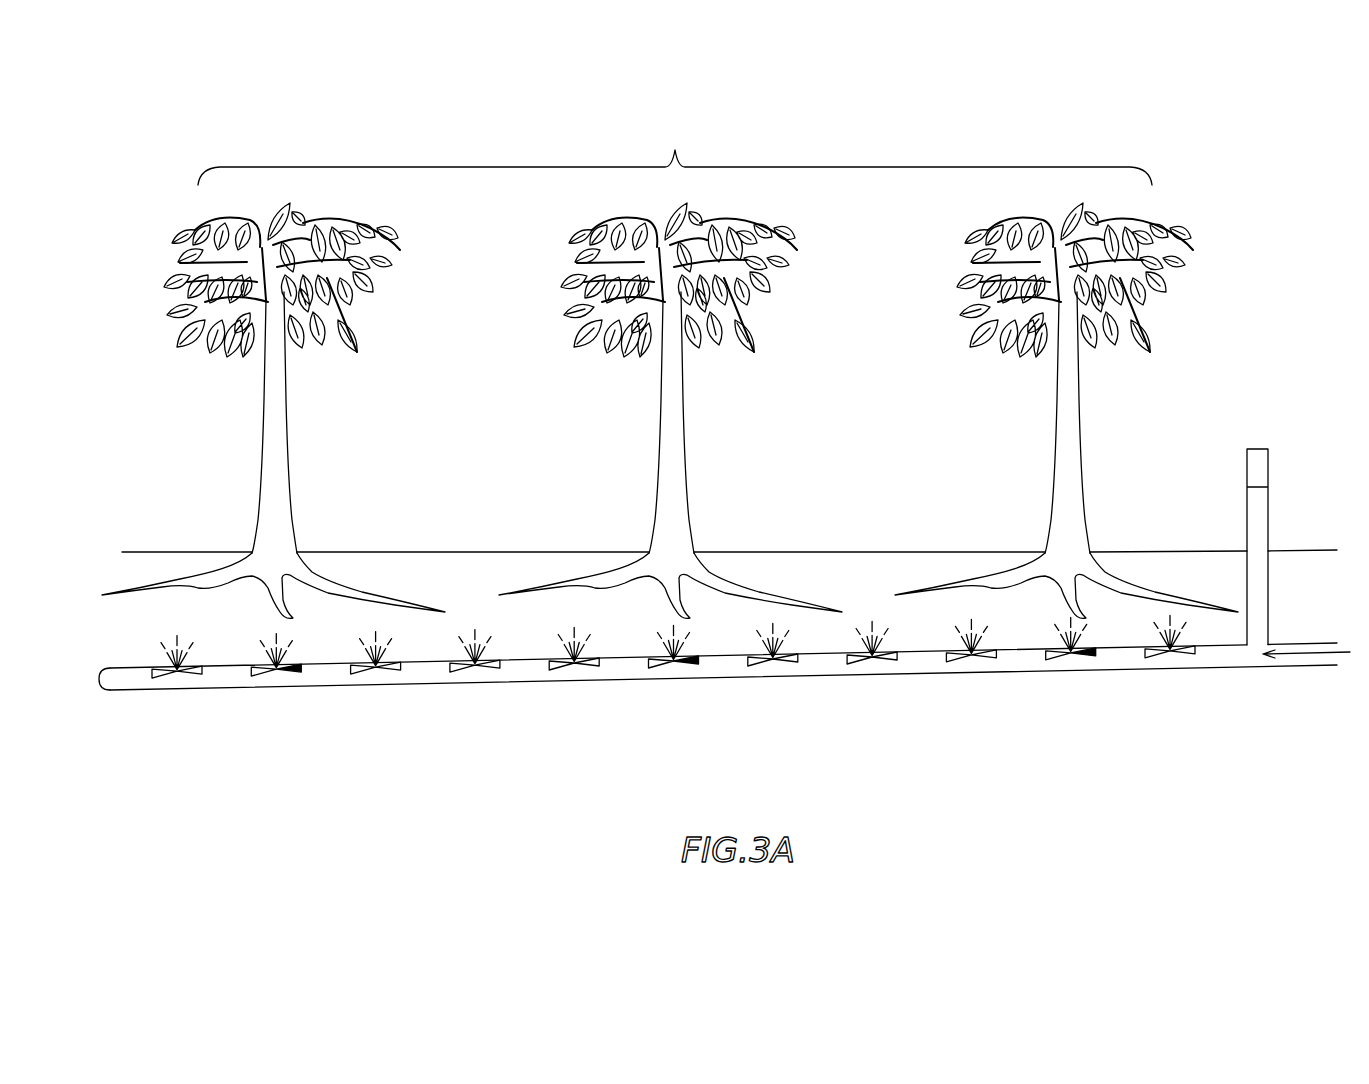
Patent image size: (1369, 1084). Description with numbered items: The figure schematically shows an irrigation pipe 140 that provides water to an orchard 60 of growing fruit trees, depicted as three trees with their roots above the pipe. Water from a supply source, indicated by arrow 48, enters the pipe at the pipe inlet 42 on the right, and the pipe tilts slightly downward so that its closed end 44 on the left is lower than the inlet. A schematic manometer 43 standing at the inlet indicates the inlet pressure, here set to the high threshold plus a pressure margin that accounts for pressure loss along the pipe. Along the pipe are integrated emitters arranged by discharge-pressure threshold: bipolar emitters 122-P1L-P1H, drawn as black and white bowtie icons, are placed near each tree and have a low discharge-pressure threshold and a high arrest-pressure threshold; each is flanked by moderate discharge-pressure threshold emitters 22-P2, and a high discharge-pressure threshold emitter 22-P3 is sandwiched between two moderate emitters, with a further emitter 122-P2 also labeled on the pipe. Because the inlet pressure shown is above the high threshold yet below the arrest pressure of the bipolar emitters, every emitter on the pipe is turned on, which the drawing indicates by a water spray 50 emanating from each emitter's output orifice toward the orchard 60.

The orchard 60 is at (675, 150).
The irrigation pipe 140 is at (242, 705).
The end 44 is at (120, 688).
The manometer 43 is at (1262, 449).
The pipe inlet 42 is at (1310, 642).
The arrow 48 is at (1305, 658).
The water spray 50 is at (693, 638).
The moderate discharge-pressure threshold emitter 22-P2 is at (192, 694).
The high discharge-pressure threshold emitter 22-P3 is at (482, 693).
The bipolar emitter 122-P1L-P1H is at (700, 681).
The emitter 122-P2 is at (984, 681).